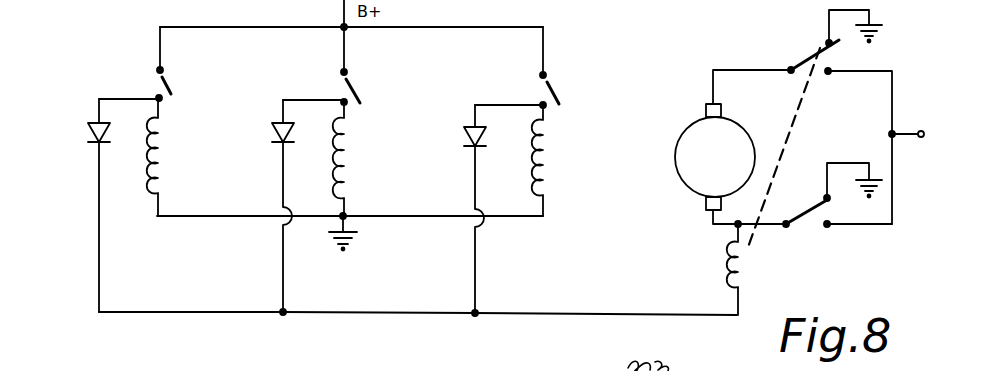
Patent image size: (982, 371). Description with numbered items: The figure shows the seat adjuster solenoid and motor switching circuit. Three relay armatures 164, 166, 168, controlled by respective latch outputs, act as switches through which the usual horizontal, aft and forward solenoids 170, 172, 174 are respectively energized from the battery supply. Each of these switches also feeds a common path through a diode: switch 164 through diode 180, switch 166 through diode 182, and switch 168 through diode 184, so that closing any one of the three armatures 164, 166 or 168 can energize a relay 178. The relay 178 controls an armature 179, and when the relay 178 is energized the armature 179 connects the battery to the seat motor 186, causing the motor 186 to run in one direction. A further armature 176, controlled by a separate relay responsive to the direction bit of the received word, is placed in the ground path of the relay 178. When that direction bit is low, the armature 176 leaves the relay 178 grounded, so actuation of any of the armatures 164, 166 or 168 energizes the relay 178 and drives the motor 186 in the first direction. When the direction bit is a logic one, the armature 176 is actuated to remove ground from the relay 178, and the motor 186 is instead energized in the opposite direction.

The armature 164 is at (560, 91).
The armature 166 is at (362, 91).
The armature 168 is at (167, 83).
The horizontal solenoid 170 is at (548, 163).
The aft solenoid 172 is at (350, 155).
The forward solenoid 174 is at (163, 147).
The armature 176 is at (810, 216).
The relay 178 is at (741, 283).
The armature 179 is at (798, 65).
The diode 180 is at (470, 128).
The diode 182 is at (277, 133).
The diode 184 is at (97, 133).
The motor 186 is at (737, 137).